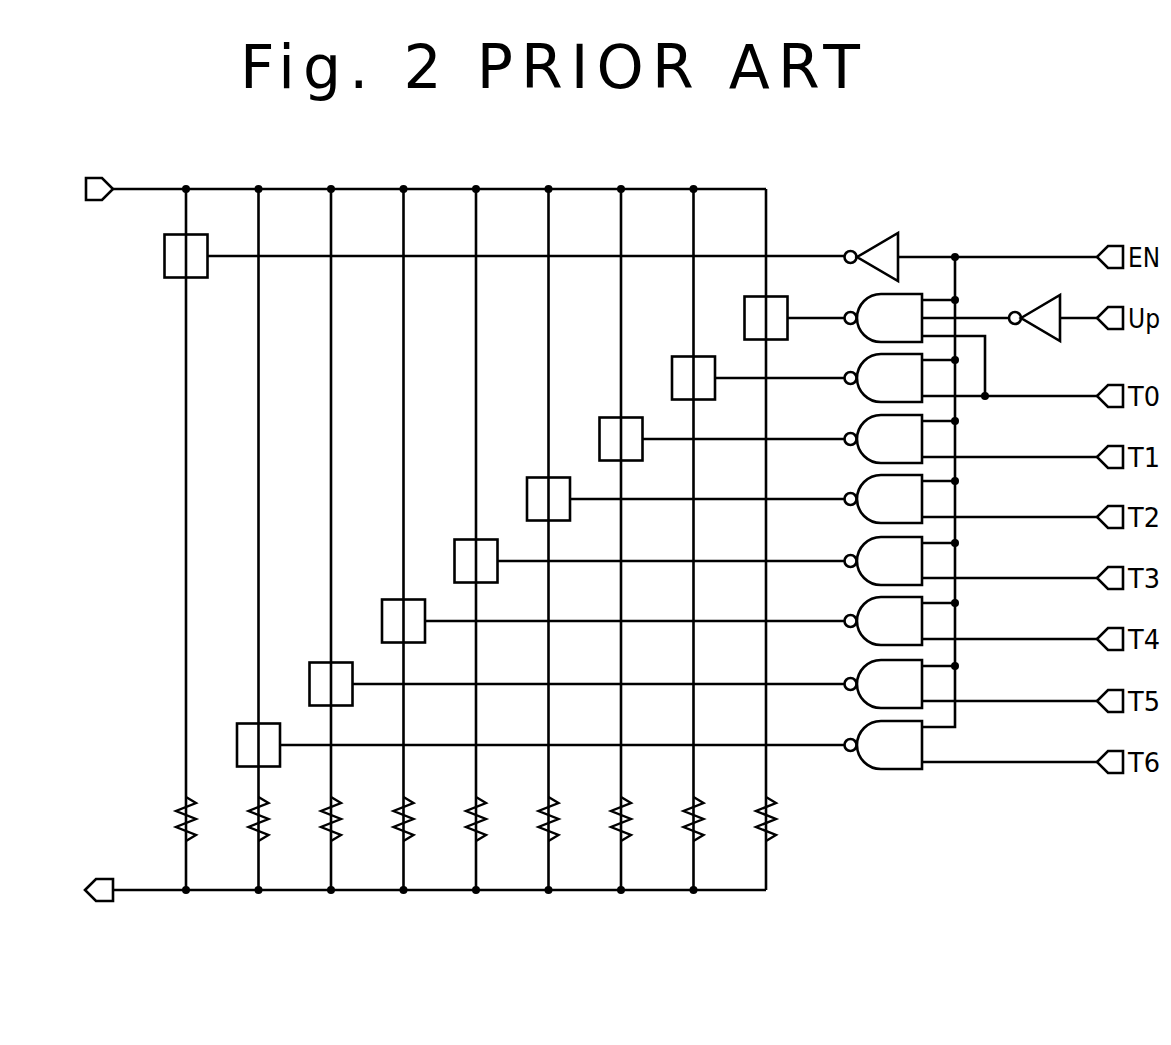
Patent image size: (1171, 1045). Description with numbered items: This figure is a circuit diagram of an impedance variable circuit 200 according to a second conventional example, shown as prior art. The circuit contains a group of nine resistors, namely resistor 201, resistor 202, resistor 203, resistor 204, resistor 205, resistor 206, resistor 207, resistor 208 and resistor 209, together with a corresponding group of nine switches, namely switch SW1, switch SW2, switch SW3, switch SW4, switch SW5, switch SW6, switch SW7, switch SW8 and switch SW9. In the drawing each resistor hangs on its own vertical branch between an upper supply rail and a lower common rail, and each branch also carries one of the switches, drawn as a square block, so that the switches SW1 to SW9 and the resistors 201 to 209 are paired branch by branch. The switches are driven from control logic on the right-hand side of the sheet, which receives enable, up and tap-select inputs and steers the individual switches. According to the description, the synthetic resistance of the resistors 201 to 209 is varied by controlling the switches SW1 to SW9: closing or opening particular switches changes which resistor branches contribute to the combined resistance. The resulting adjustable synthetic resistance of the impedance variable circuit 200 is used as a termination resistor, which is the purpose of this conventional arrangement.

The impedance variable circuit 200 is at (951, 166).
The switch SW1 is at (745, 327).
The switch SW2 is at (680, 356).
The switch SW3 is at (607, 418).
The switch SW4 is at (534, 478).
The switch SW5 is at (462, 540).
The switch SW6 is at (390, 600).
The switch SW7 is at (317, 662).
The switch SW8 is at (244, 724).
The switch SW9 is at (163, 253).
The resistor 201 is at (756, 842).
The resistor 202 is at (684, 842).
The resistor 203 is at (611, 842).
The resistor 204 is at (538, 842).
The resistor 205 is at (466, 842).
The resistor 206 is at (394, 842).
The resistor 207 is at (321, 842).
The resistor 208 is at (248, 842).
The resistor 209 is at (176, 842).